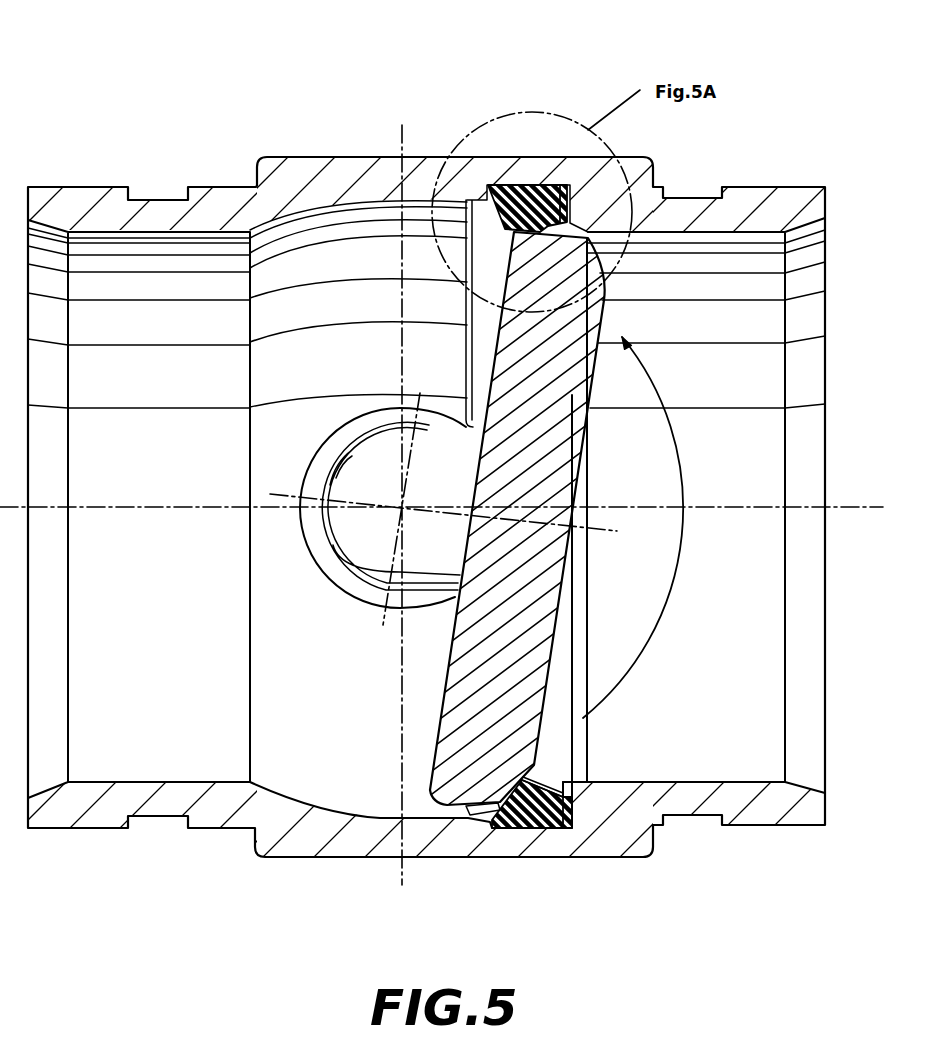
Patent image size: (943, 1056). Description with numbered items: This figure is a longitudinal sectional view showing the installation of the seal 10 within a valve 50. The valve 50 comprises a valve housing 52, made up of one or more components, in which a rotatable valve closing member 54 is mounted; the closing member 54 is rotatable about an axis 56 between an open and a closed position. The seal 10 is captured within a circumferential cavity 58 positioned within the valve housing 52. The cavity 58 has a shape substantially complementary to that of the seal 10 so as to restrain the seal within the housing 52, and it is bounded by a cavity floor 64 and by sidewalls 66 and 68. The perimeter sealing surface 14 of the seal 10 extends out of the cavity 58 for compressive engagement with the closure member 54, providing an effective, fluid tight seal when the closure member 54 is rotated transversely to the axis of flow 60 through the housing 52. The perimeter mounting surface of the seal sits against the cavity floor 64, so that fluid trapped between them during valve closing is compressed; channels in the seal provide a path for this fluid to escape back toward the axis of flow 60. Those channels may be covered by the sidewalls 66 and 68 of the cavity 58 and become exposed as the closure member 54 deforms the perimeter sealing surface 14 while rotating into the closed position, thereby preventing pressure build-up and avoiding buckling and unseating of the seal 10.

The valve 50 is at (168, 112).
The valve housing 52 is at (310, 166).
The valve closing member 54 is at (455, 688).
The axis 56 is at (397, 512).
The axis of flow 60 is at (862, 507).
The sidewall 68 is at (570, 783).
The perimeter sealing surface 14 is at (550, 778).
The circumferential cavity 58 is at (520, 830).
The seal 10 is at (550, 833).
The cavity floor 64 is at (500, 827).
The sidewall 66 is at (490, 821).